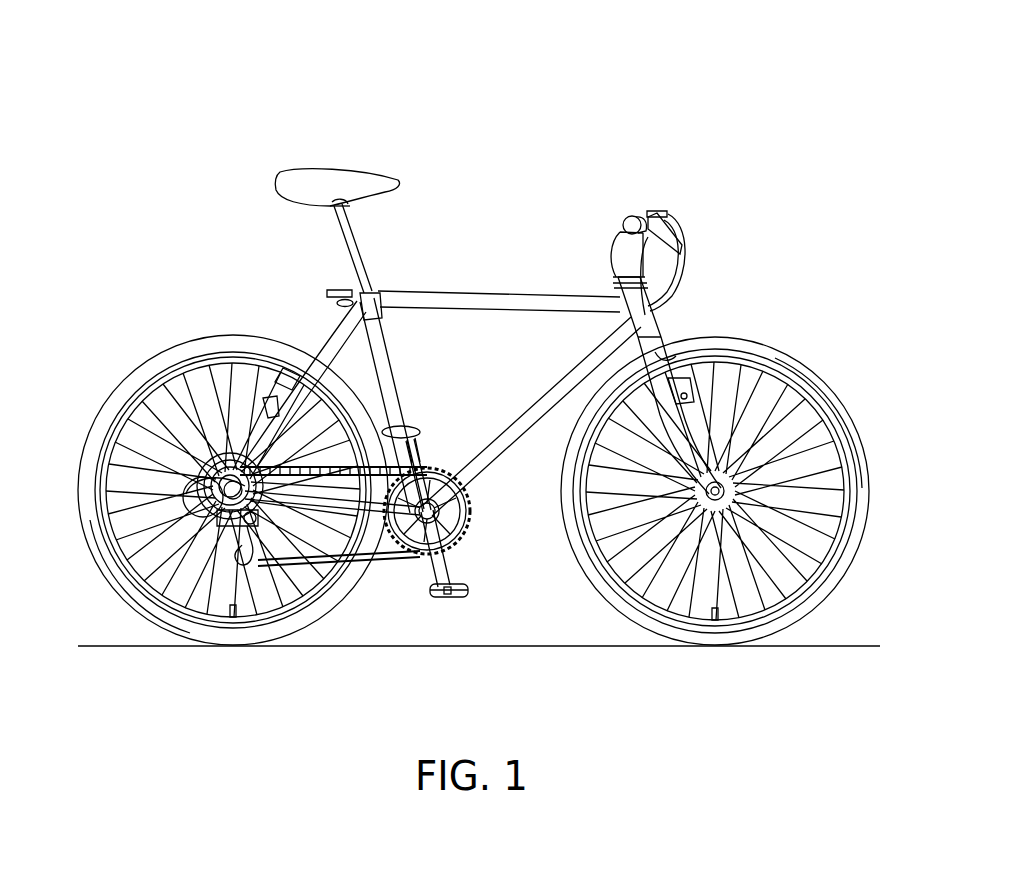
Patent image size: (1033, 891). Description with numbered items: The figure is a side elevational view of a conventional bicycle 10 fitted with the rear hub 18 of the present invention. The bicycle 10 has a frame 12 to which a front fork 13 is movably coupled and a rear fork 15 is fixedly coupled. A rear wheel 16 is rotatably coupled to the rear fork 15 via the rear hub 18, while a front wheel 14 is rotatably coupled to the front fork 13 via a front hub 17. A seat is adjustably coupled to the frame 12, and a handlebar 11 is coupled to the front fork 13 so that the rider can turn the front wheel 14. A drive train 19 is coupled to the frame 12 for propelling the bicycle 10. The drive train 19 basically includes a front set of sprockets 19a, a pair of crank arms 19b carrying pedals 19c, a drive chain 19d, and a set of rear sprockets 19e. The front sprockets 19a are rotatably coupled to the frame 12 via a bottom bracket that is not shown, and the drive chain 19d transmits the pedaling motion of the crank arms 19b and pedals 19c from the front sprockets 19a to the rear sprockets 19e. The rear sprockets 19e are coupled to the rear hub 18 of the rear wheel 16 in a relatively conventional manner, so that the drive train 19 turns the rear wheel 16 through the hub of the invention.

The bicycle 10 is at (668, 126).
The handlebar 11 is at (632, 217).
The frame 12 is at (465, 291).
The front fork 13 is at (688, 394).
The front wheel 14 is at (800, 360).
The rear fork 15 is at (315, 347).
The rear wheel 16 is at (108, 395).
The front hub 17 is at (797, 447).
The rear hub 18 is at (172, 520).
The drive train 19 is at (387, 576).
The front set of sprockets 19a is at (458, 510).
The crank arms 19b is at (446, 566).
The pedals 19c is at (463, 598).
The drive chain 19d is at (400, 557).
The rear sprockets 19e is at (213, 417).